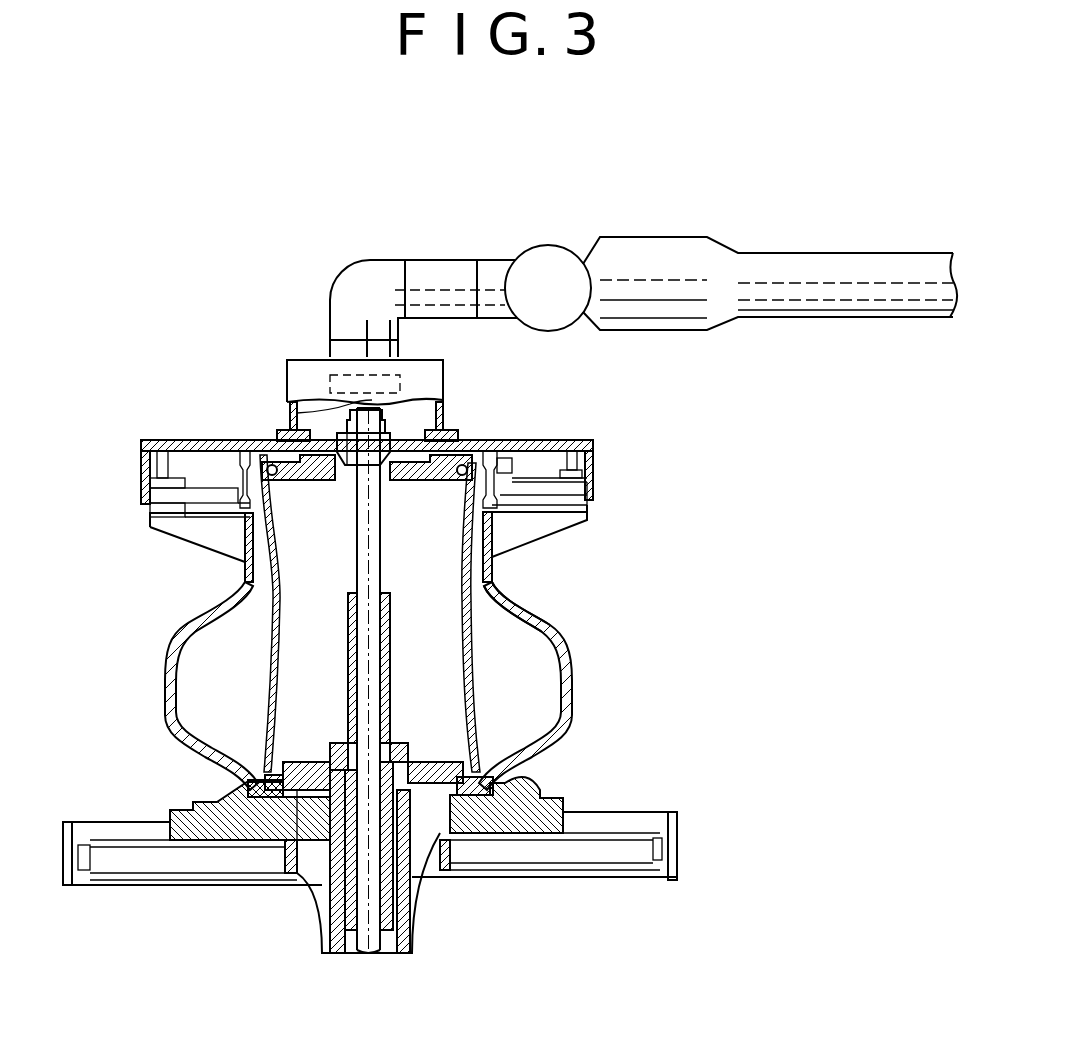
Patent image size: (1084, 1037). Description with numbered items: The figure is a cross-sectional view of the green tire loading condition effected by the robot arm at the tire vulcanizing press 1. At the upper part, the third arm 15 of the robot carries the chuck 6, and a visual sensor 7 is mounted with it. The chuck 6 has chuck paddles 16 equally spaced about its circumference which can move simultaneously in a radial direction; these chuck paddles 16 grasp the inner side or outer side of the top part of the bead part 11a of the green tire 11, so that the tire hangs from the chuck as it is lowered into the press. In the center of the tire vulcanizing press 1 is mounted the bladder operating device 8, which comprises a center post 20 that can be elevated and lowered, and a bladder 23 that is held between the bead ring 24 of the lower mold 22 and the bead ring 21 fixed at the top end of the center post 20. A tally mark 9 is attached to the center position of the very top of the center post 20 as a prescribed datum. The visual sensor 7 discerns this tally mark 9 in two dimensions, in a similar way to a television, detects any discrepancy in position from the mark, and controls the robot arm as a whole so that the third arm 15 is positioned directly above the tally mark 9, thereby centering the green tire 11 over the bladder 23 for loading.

The tire vulcanizing press 1 is at (700, 848).
The chuck 6 is at (606, 450).
The visual sensor 7 is at (325, 392).
The bladder operating device 8 is at (432, 897).
The tally mark 9 is at (297, 411).
The green tire 11 is at (574, 658).
The bead part 11a is at (506, 585).
The No. 3 arm 15 is at (450, 270).
The chuck paddles 16 is at (548, 523).
The center post 20 is at (386, 548).
The bead ring 21 is at (455, 468).
The lower mold 22 is at (530, 806).
The bladder 23 is at (472, 667).
The bead ring 24 is at (515, 770).